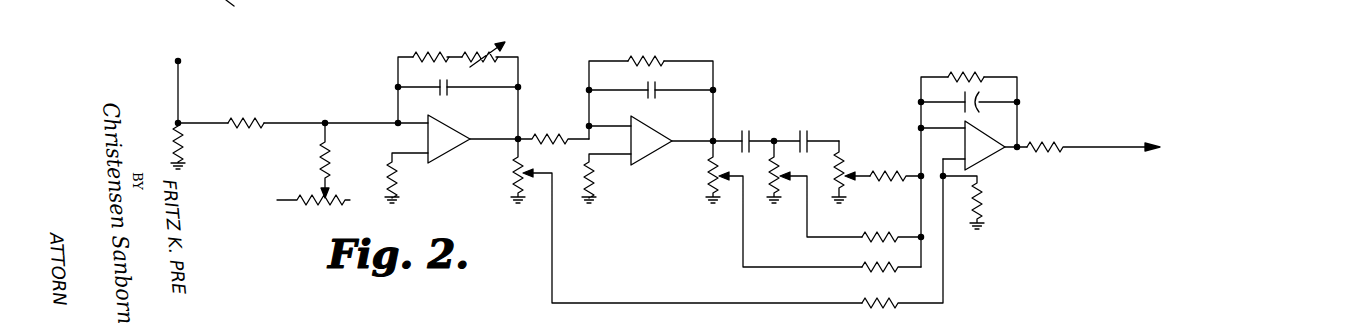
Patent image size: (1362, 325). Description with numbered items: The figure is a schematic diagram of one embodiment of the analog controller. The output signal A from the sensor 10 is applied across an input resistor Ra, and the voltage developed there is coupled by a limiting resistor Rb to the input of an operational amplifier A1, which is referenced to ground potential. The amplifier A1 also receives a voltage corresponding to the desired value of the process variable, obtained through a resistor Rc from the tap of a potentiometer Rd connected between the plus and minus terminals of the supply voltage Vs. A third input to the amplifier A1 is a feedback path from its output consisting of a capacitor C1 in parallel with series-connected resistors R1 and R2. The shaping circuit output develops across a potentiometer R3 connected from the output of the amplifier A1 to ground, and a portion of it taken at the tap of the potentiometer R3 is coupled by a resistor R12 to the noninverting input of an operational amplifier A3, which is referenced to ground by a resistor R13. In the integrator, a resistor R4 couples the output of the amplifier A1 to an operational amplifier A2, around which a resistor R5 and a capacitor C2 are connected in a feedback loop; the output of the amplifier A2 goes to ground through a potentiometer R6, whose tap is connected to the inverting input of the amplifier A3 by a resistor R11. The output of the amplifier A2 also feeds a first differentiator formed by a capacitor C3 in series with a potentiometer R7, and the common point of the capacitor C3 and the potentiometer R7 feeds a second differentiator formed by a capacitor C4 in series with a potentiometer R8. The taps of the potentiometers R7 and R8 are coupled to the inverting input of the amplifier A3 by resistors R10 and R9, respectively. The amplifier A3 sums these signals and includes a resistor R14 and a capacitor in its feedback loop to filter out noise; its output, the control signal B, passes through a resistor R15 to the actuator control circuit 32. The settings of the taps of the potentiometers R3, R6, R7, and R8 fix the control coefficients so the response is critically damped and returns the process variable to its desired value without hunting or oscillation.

The sensor 10 is at (101, 64).
The actuator control circuit 32 is at (1230, 151).
The output signal from sensor A is at (189, 87).
The control signal B is at (1145, 135).
The input resistor Ra is at (160, 144).
The limiting resistor Rb is at (246, 109).
The resistor Rc is at (341, 160).
The potentiometer Rd is at (313, 213).
The supply voltage Vs is at (259, 196).
The resistor R1 is at (431, 44).
The resistor R2 is at (486, 42).
The potentiometer R3 is at (673, 221).
The resistor R4 is at (553, 129).
The resistor R5 is at (652, 47).
The potentiometer R6 is at (771, 204).
The potentiometer R7 is at (814, 189).
The potentiometer R8 is at (854, 172).
The resistor R9 is at (895, 163).
The resistor R10 is at (891, 223).
The resistor R11 is at (891, 258).
The resistor R12 is at (902, 233).
The resistor R13 is at (987, 202).
The resistor R14 is at (974, 63).
The resistor R15 is at (1087, 132).
The capacitor C1 is at (461, 97).
The capacitor C2 is at (666, 102).
The capacitor C3 is at (753, 131).
The capacitor C4 is at (806, 130).
The operational amplifier A1 is at (451, 159).
The operational amplifier A2 is at (662, 159).
The operational amplifier A3 is at (974, 150).